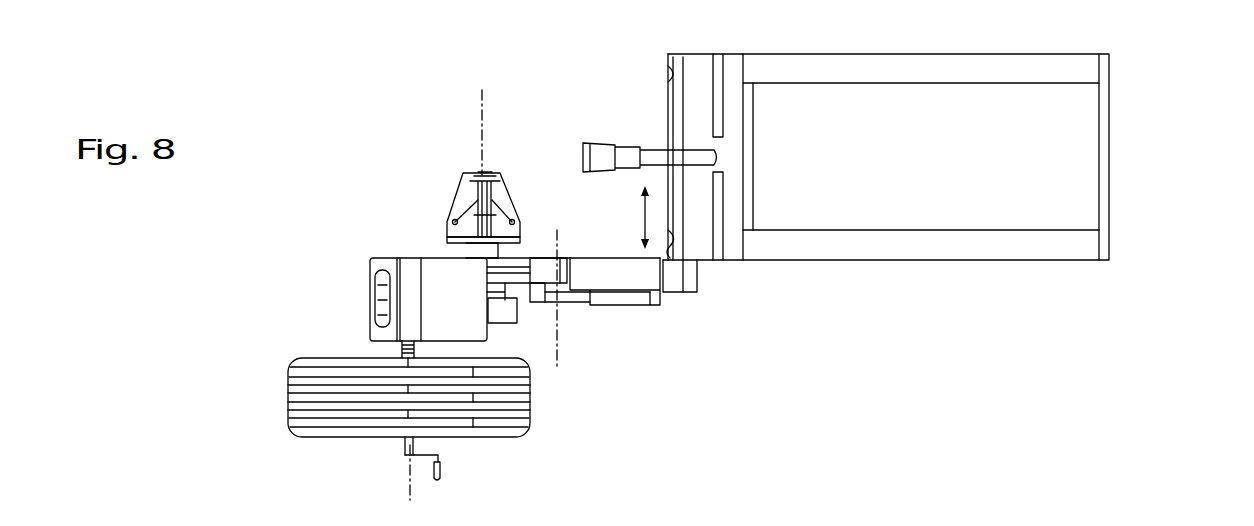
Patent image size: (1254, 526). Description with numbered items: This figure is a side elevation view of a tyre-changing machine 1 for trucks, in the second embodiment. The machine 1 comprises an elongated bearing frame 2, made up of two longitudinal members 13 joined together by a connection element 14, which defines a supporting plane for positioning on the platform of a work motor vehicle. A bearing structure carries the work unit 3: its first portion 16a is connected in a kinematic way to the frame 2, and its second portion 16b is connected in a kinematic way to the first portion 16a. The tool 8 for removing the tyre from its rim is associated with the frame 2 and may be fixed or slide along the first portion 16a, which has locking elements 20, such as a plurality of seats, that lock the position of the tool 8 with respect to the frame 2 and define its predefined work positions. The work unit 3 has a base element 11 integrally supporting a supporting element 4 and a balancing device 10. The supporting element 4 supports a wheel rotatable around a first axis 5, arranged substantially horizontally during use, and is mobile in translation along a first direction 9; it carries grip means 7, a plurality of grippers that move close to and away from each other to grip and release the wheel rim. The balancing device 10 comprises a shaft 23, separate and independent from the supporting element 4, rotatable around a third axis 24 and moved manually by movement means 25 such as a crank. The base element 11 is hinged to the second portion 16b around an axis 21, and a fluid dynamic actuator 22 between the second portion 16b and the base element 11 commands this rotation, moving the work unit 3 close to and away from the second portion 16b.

The tyre-changing machine 1 is at (1019, 376).
The bearing frame 2 is at (1073, 53).
The work unit 3 is at (376, 222).
The supporting element 4 is at (442, 212).
The first axis 5 is at (476, 118).
The grip means 7 is at (462, 198).
The tool 8 is at (600, 152).
The first direction 9 is at (638, 216).
The balancing device 10 is at (360, 305).
The base element 11 is at (505, 285).
The longitudinal members 13 is at (900, 62).
The connection element 14 is at (1108, 160).
The first portion 16a is at (700, 210).
The second portion 16b is at (648, 300).
The locking elements 20 is at (668, 74).
The axis 21 is at (545, 0).
The fluid dynamic actuator 22 is at (596, 300).
The shaft 23 is at (408, 355).
The third axis 24 is at (400, 500).
The movement means 25 is at (443, 470).